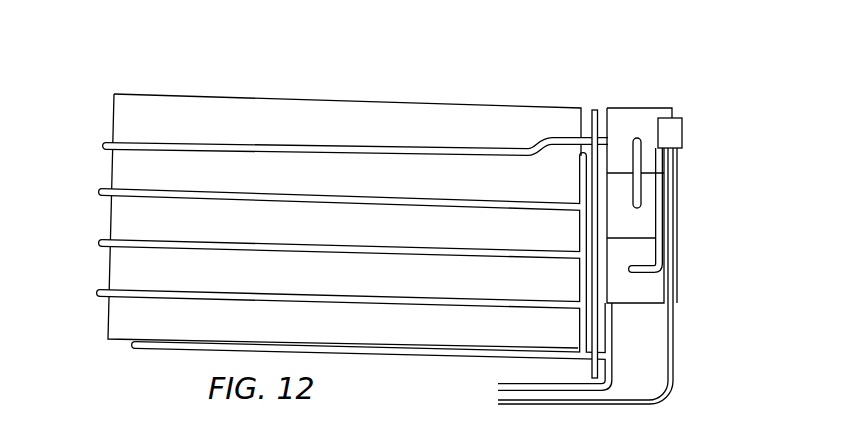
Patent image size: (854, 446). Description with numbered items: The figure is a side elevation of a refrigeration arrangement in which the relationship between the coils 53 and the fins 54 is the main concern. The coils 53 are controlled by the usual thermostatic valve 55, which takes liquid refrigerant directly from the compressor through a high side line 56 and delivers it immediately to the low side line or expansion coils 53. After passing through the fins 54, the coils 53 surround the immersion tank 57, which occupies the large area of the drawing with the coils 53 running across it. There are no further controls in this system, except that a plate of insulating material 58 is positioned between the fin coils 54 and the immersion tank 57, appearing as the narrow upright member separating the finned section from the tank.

The coils 53 is at (108, 145).
The fins 54 is at (628, 122).
The thermostatic valve 55 is at (672, 128).
The high side line 56 is at (672, 375).
The immersion tank 57 is at (333, 113).
The plate of insulating material 58 is at (597, 106).